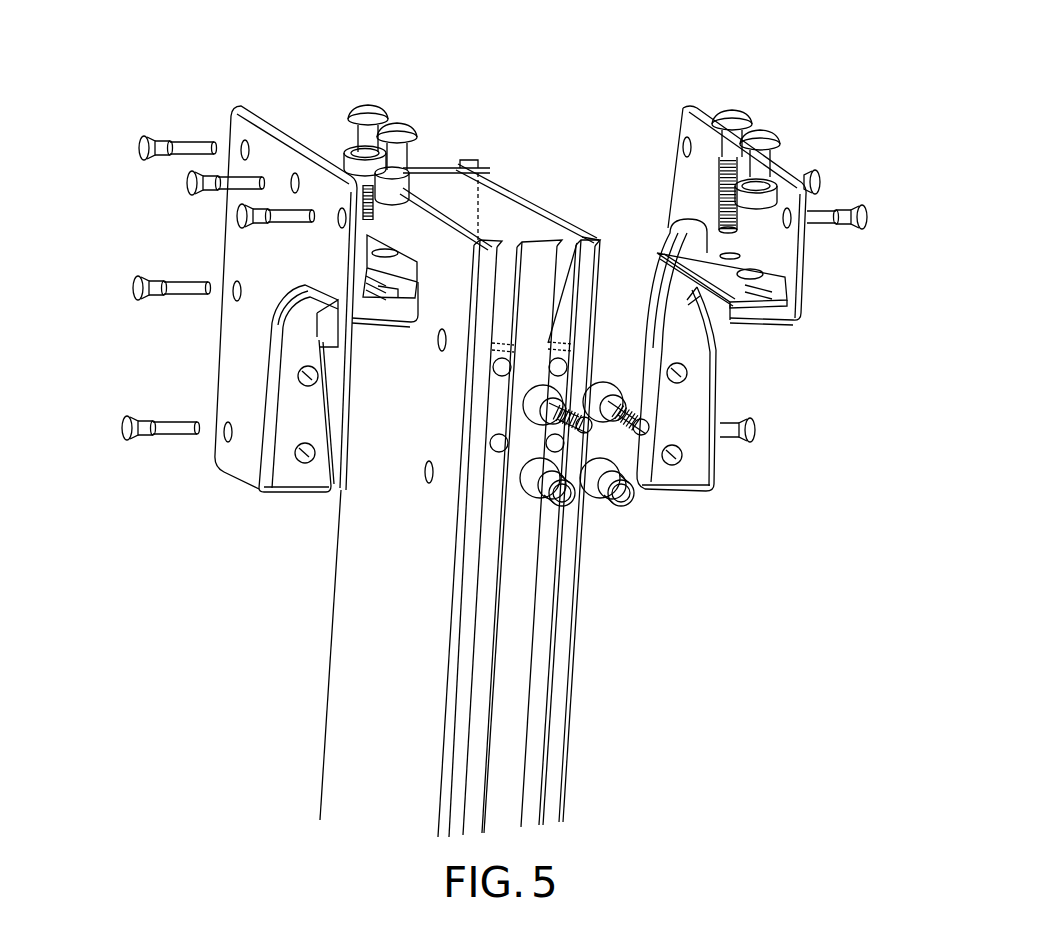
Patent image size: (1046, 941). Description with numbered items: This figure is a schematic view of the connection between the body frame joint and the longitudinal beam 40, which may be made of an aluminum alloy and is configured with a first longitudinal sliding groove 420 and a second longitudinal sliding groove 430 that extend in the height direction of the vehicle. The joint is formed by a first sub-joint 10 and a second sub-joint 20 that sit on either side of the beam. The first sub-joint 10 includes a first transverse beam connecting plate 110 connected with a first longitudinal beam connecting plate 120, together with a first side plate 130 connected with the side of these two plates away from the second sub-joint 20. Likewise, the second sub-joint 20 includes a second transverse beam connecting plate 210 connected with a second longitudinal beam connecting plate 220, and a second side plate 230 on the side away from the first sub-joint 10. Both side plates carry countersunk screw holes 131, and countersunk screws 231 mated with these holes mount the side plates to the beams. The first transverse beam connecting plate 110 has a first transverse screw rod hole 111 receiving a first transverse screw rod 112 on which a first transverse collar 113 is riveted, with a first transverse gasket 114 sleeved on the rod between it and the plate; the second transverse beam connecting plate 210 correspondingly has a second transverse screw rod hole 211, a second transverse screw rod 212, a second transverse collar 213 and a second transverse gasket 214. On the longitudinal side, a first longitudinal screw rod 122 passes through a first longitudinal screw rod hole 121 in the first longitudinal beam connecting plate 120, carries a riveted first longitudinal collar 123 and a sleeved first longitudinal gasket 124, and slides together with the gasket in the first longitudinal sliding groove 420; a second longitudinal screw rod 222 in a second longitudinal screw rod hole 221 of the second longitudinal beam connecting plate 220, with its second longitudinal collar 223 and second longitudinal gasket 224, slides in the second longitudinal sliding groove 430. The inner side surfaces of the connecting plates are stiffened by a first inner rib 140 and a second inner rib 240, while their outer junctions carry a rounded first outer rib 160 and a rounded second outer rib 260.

The first sub-joint 10 is at (120, 590).
The second sub-joint 20 is at (920, 330).
The longitudinal beam 40 is at (388, 657).
The first transverse beam connecting plate 110 is at (432, 255).
The first transverse screw rod hole 111 is at (365, 248).
The first transverse screw rod 112 is at (393, 153).
The first transverse collar 113 is at (350, 152).
The first transverse gasket 114 is at (385, 252).
The first longitudinal beam connecting plate 120 is at (303, 472).
The first longitudinal screw rod hole 121 is at (305, 372).
The first longitudinal screw rod 122 is at (535, 405).
The first longitudinal collar 123 is at (537, 493).
The first longitudinal gasket 124 is at (497, 407).
The first side plate 130 is at (233, 367).
The countersunk screw holes 131 is at (242, 140).
The first inner rib 140 is at (388, 254).
The first outer rib 160 is at (302, 310).
The second transverse beam connecting plate 210 is at (760, 313).
The second transverse screw rod hole 211 is at (762, 275).
The second transverse screw rod 212 is at (727, 148).
The second transverse collar 213 is at (755, 198).
The second transverse gasket 214 is at (700, 200).
The second longitudinal beam connecting plate 220 is at (690, 422).
The second longitudinal screw rod hole 221 is at (677, 457).
The second longitudinal screw rod 222 is at (640, 430).
The second longitudinal collar 223 is at (620, 505).
The second longitudinal gasket 224 is at (582, 236).
The second side plate 230 is at (803, 277).
The countersunk screws 231 is at (148, 286).
The second inner rib 240 is at (687, 307).
The second outer rib 260 is at (662, 250).
The first longitudinal sliding groove 420 is at (483, 602).
The second longitudinal sliding groove 430 is at (543, 628).